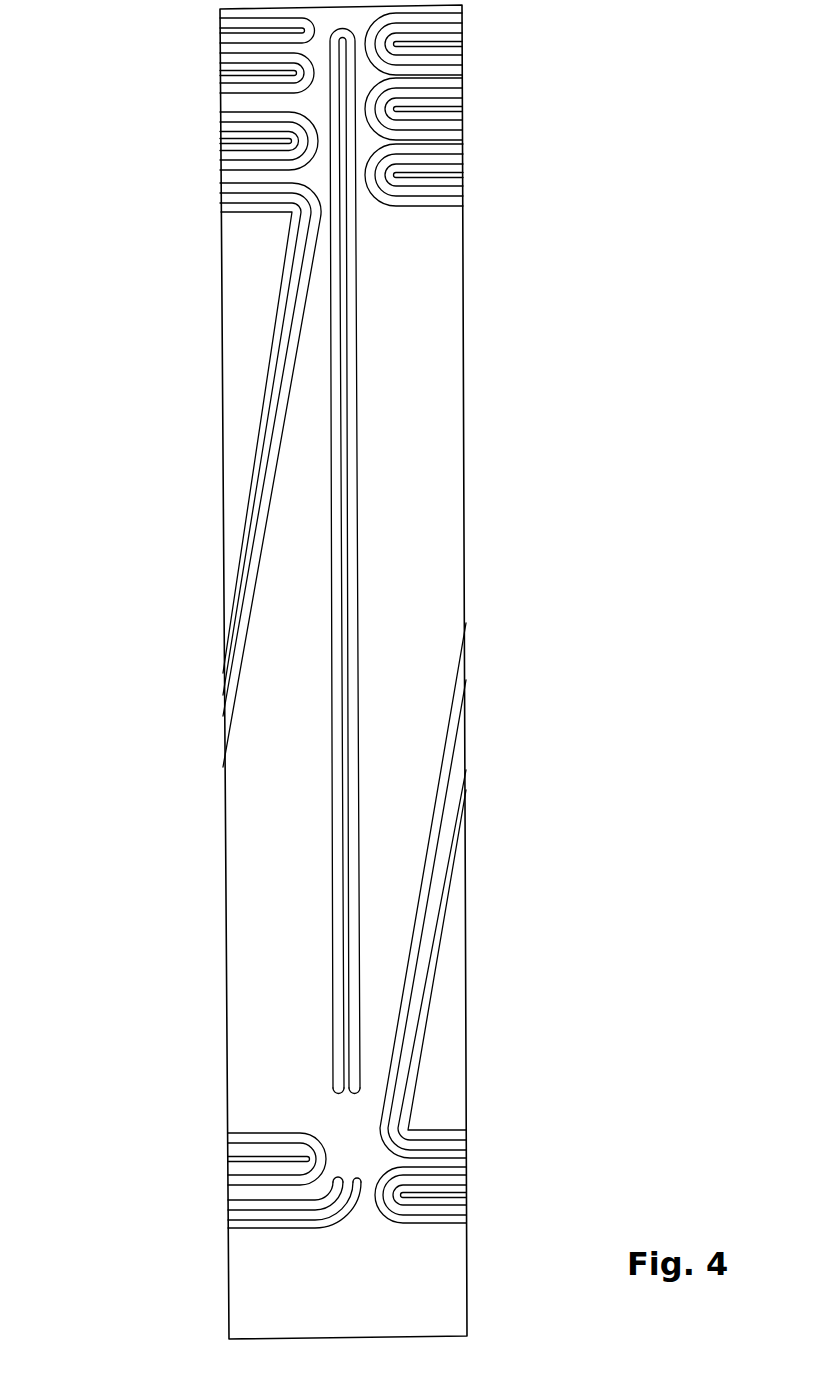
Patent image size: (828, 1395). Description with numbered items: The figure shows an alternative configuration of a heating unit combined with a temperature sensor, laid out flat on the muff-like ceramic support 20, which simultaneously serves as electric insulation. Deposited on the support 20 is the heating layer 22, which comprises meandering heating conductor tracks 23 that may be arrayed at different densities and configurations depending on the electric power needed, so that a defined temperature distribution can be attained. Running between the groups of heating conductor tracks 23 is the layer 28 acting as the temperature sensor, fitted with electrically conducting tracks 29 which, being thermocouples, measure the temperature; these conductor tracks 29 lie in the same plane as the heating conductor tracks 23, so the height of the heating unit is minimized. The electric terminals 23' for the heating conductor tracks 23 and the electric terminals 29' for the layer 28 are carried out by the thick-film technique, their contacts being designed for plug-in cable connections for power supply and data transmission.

The ceramic support 20 is at (255, 866).
The heating layer 22 is at (258, 238).
The heating conductor tracks 23 is at (253, 618).
The electric terminals for the heating conductor tracks 23' is at (228, 1237).
The layer acting as temperature sensor 28 is at (319, 561).
The temperature measurement conductor tracks 29 is at (319, 561).
The electric terminals for the temperature sensor layer 29' is at (222, 1063).